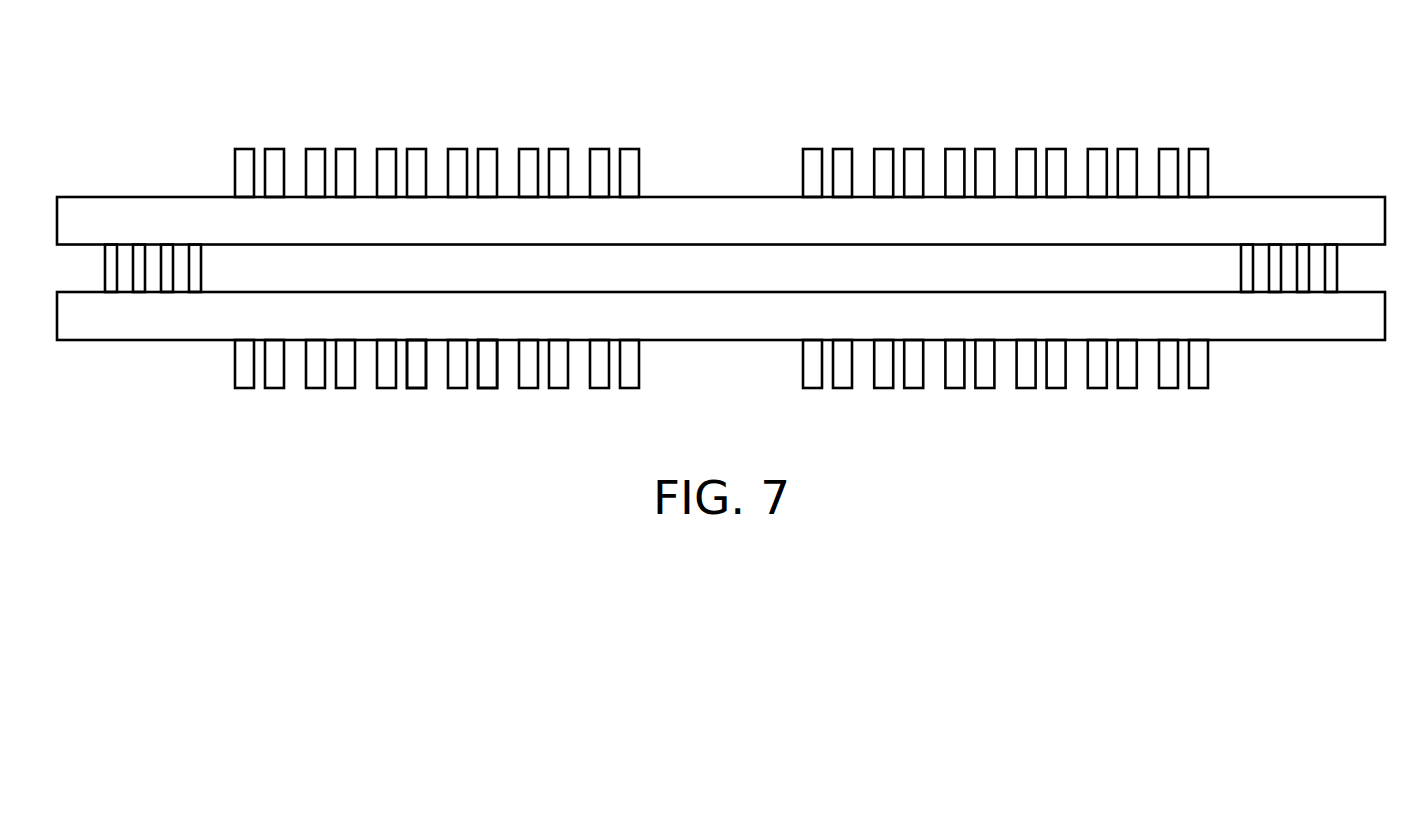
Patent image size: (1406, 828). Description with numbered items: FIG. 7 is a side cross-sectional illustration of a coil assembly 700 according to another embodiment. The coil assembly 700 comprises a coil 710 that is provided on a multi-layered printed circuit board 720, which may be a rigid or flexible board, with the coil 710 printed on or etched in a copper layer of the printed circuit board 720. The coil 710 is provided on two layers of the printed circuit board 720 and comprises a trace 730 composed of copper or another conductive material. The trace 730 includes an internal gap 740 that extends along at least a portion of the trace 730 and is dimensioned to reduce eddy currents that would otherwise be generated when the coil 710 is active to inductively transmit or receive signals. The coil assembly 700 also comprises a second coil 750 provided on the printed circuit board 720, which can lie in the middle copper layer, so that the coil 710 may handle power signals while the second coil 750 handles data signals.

The coil assembly 700 is at (1249, 98).
The coil 710 is at (567, 121).
The printed circuit board 720 is at (1157, 330).
The trace 730 is at (269, 401).
The internal gap 740 is at (470, 396).
The second coil 750 is at (1315, 296).